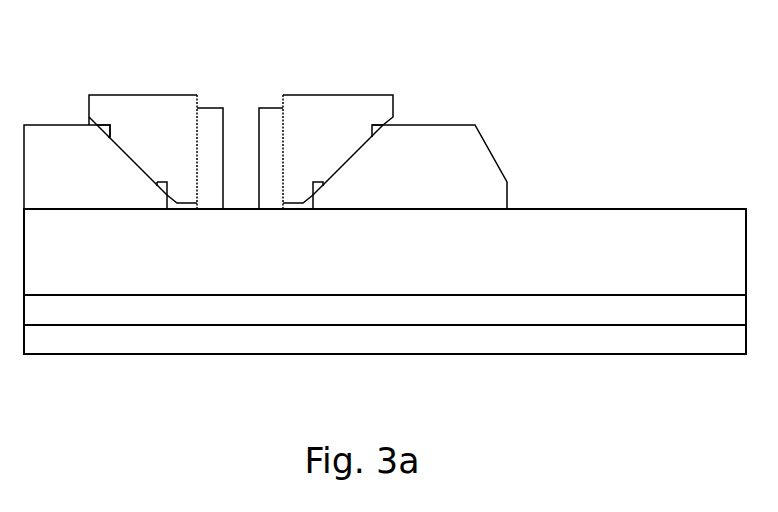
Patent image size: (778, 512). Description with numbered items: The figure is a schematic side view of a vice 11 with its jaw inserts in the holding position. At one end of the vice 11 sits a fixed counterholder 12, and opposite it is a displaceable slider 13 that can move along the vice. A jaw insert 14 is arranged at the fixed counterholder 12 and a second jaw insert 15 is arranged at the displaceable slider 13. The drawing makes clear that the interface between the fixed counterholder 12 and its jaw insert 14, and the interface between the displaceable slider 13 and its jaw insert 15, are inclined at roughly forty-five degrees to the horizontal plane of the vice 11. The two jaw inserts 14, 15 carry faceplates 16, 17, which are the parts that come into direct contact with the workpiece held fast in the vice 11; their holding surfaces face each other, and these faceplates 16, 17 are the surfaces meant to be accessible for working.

The vice 11 is at (608, 160).
The fixed counterholder 12 is at (77, 186).
The displaceable slider 13 is at (437, 184).
The jaw insert 14 is at (136, 156).
The jaw insert 15 is at (332, 154).
The faceplate 16 is at (208, 112).
The faceplate 17 is at (267, 120).